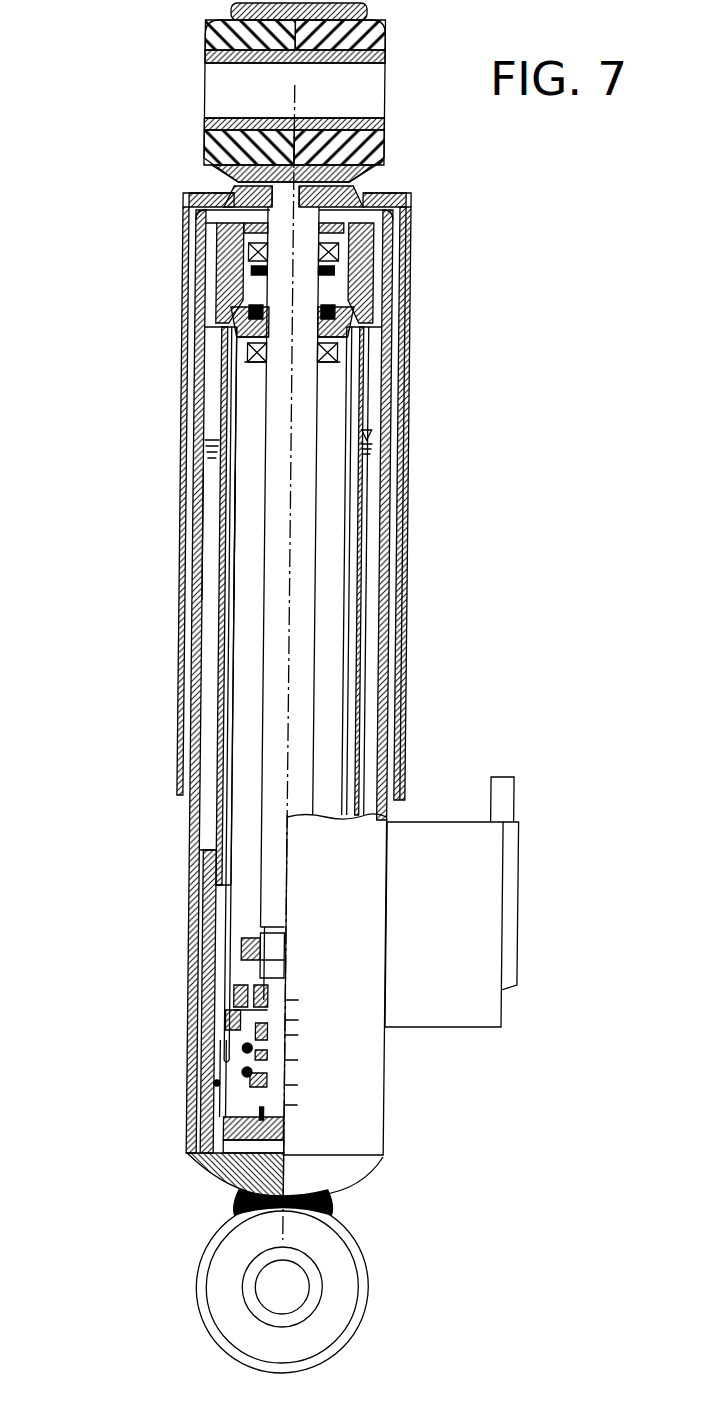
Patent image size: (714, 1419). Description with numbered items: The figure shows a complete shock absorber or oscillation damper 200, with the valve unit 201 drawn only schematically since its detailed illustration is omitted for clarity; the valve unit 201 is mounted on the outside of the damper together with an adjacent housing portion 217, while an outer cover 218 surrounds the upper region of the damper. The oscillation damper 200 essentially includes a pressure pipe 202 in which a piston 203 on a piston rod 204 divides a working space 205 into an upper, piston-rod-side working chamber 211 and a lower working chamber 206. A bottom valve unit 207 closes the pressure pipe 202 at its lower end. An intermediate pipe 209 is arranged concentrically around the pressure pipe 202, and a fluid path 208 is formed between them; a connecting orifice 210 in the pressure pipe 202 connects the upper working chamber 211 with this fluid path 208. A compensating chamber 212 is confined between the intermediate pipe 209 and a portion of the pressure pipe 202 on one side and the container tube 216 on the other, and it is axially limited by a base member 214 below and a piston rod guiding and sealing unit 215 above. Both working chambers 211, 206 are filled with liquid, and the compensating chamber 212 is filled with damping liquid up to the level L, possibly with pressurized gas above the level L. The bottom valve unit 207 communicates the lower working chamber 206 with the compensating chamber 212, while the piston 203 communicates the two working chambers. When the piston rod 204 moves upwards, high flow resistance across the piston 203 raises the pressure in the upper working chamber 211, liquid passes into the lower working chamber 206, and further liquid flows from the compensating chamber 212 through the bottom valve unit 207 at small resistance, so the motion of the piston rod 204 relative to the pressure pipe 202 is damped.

The oscillation damper 200 is at (150, 670).
The valve unit 201 is at (455, 812).
The pressure pipe 202 is at (360, 612).
The piston 203 is at (238, 1025).
The piston rod 204 is at (311, 497).
The working space 205 is at (249, 473).
The lower working chamber 206 is at (240, 1098).
The bottom valve unit 207 is at (233, 1135).
The fluid path 208 is at (364, 650).
The intermediate pipe 209 is at (363, 700).
The connecting orifice 210 is at (358, 418).
The upper working chamber 211 is at (250, 580).
The compensating chamber 212 is at (372, 578).
The base member 214 is at (201, 1158).
The piston rod guiding and sealing unit 215 is at (364, 307).
The container tube 216 is at (386, 540).
The gas reservoir 217 is at (472, 1028).
The dust cover 218 is at (183, 205).
The level L is at (180, 410).